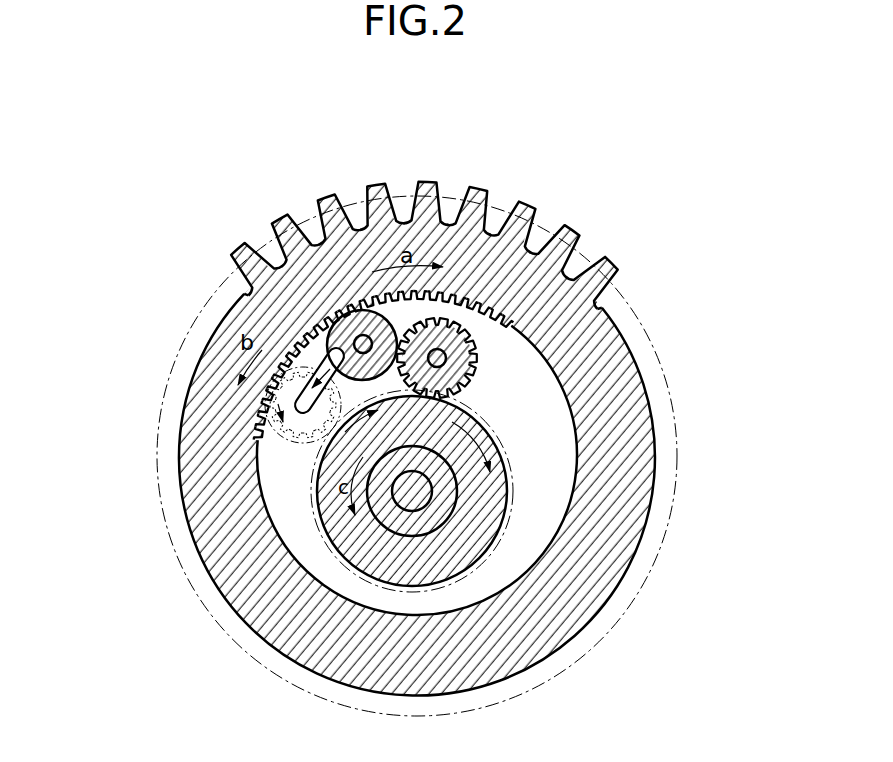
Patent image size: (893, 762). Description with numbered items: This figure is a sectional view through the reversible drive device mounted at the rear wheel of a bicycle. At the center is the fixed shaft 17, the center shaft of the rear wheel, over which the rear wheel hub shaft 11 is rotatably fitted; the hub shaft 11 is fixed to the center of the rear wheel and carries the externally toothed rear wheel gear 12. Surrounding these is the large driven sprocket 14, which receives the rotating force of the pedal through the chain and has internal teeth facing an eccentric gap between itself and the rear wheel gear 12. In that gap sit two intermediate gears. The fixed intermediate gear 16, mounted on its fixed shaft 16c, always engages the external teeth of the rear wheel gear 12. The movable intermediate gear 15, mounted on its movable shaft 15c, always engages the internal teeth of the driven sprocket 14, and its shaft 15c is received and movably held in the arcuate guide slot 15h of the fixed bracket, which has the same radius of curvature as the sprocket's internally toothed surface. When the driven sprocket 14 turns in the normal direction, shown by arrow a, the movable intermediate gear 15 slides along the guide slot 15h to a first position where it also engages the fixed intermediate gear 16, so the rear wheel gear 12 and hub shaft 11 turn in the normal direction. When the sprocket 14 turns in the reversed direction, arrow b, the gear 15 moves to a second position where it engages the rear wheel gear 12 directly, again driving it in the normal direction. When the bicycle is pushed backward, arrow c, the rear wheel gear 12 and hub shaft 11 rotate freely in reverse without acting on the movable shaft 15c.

The rear wheel hub shaft 11 is at (410, 500).
The rear wheel gear 12 is at (498, 503).
The driven sprocket 14 is at (594, 353).
The movable intermediate gear 15 is at (330, 320).
The movable shaft 15c is at (307, 333).
The arcuate guide slot 15h is at (272, 388).
The fixed intermediate gear 16 is at (510, 317).
The fixed shaft 16c is at (438, 345).
The fixed shaft 17 is at (327, 583).